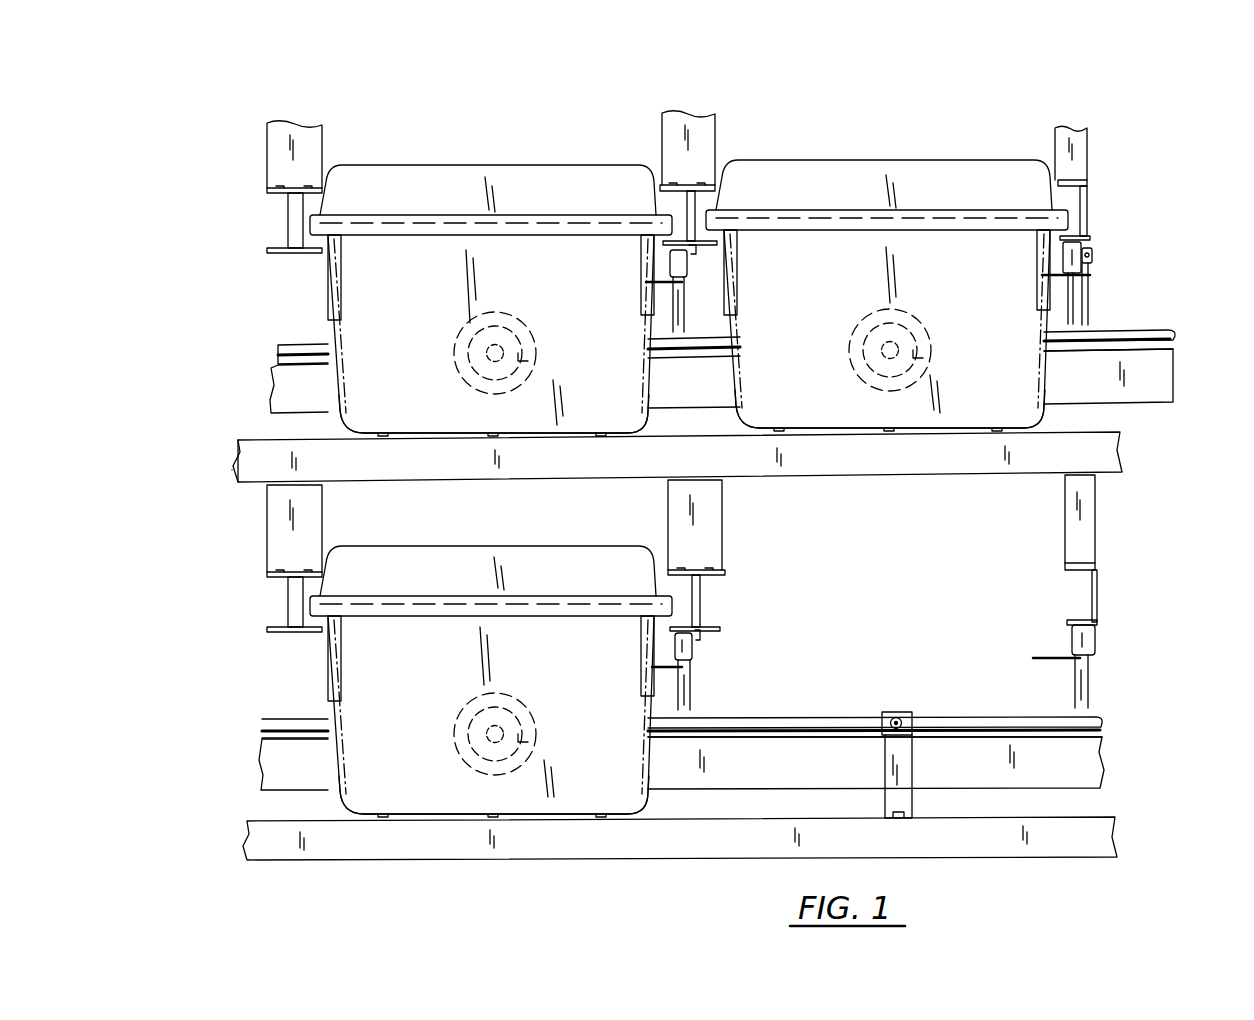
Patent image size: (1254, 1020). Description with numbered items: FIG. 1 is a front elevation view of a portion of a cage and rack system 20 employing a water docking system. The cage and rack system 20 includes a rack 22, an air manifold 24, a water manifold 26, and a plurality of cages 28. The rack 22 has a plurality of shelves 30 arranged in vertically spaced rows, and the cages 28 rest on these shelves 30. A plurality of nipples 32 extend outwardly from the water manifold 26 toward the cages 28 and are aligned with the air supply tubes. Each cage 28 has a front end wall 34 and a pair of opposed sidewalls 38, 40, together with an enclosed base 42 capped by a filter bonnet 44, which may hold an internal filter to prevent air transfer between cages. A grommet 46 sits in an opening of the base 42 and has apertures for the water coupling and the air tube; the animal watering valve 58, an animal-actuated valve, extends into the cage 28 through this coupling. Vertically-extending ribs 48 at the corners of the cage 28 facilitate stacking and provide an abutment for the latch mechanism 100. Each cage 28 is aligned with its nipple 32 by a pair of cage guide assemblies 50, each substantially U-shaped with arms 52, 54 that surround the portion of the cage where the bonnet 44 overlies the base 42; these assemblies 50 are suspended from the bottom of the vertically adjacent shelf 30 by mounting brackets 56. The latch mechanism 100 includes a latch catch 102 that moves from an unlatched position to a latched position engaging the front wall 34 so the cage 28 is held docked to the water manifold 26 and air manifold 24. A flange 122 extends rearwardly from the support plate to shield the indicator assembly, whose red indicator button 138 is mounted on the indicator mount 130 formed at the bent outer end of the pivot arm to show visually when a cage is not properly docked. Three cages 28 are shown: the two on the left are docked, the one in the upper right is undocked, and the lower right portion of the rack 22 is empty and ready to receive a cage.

The cage and rack system 20 is at (912, 70).
The rack 22 is at (245, 440).
The air manifold 24 is at (1166, 390).
The water manifold 26 is at (1176, 333).
The cage 28 is at (345, 287).
The shelf 30 is at (1121, 462).
The nipple 32 is at (899, 712).
The front end wall 34 is at (553, 398).
The sidewall 38 is at (338, 405).
The sidewall 40 is at (652, 396).
The base 42 is at (432, 428).
The filter bonnet 44 is at (516, 164).
The grommet 46 is at (526, 360).
The rib 48 is at (328, 277).
The cage guide assembly 50 is at (320, 206).
The arm 52 is at (267, 251).
The arm 54 is at (267, 190).
The mounting bracket 56 is at (267, 133).
The animal watering valve 58 is at (506, 346).
The latch mechanism 100 is at (698, 297).
The latch catch 102 is at (644, 281).
The flange 122 is at (694, 647).
The indicator mount 130 is at (1092, 262).
The indicator button 138 is at (1094, 250).